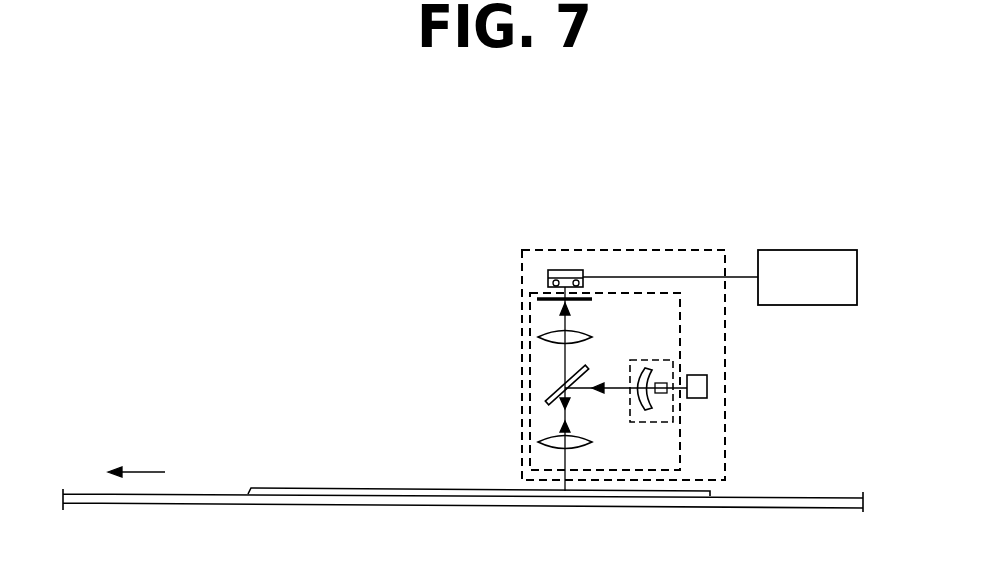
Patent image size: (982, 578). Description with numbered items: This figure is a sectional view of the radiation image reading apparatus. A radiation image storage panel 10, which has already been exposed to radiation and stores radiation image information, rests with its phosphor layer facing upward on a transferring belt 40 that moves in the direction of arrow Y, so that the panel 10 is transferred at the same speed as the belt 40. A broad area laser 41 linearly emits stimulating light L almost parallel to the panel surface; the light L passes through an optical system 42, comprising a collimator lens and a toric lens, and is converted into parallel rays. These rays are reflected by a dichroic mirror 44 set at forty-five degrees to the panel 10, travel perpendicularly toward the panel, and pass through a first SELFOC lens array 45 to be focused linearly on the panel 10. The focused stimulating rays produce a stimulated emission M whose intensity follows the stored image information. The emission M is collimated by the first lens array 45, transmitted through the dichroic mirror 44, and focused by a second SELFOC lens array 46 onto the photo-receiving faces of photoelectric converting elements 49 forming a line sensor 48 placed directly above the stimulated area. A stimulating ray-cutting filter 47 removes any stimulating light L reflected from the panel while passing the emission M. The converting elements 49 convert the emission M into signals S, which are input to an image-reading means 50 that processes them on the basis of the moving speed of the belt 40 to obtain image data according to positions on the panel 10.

The radiation image storage panel 10 is at (335, 489).
The transferring belt 40 is at (808, 497).
The broad area laser 41 is at (707, 386).
The optical system 42 is at (650, 360).
The dichroic mirror 44 is at (556, 401).
The first SELFOC lens array 45 is at (592, 442).
The second SELFOC lens array 46 is at (540, 339).
The stimulating ray-cutting filter 47 is at (537, 301).
The line sensor 48 is at (543, 255).
The photoelectric converting elements 49 is at (548, 282).
The image-reading means 50 is at (808, 250).
The signals S is at (697, 277).
The stimulating light L is at (612, 385).
The stimulated emission M is at (563, 364).
The arrow Y is at (136, 459).